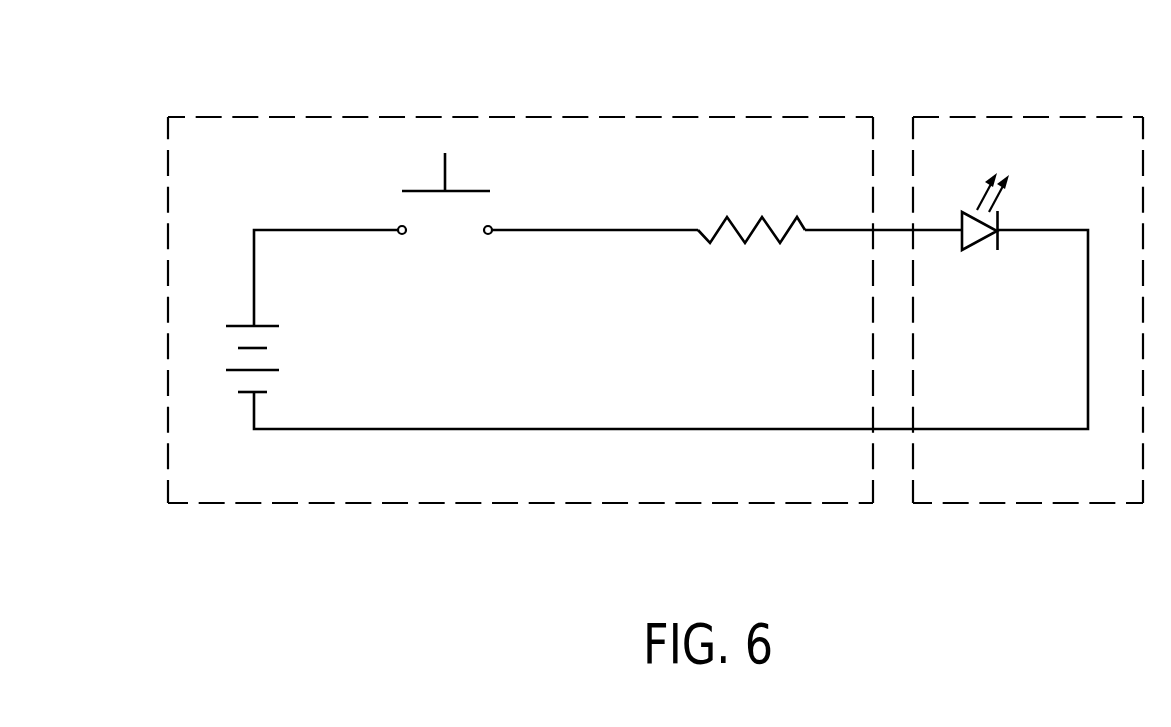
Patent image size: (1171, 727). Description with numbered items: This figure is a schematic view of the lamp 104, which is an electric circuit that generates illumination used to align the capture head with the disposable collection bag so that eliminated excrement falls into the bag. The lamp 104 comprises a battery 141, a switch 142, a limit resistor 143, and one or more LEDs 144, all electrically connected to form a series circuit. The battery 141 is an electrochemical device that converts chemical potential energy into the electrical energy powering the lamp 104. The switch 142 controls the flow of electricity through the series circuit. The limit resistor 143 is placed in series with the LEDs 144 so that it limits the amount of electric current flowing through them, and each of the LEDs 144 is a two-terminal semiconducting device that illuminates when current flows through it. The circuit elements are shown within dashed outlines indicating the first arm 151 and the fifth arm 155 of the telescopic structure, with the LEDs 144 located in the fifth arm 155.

The lamp 104 is at (249, 206).
The battery 141 is at (279, 363).
The switch 142 is at (462, 176).
The limit resistor 143 is at (752, 215).
The LEDs 144 is at (978, 248).
The first arm 151 is at (645, 117).
The fifth arm 155 is at (1062, 118).